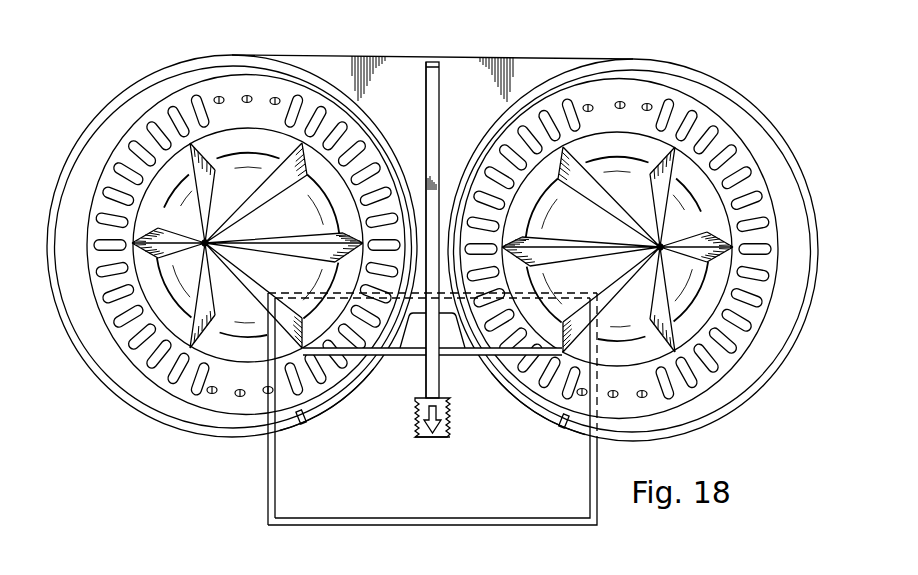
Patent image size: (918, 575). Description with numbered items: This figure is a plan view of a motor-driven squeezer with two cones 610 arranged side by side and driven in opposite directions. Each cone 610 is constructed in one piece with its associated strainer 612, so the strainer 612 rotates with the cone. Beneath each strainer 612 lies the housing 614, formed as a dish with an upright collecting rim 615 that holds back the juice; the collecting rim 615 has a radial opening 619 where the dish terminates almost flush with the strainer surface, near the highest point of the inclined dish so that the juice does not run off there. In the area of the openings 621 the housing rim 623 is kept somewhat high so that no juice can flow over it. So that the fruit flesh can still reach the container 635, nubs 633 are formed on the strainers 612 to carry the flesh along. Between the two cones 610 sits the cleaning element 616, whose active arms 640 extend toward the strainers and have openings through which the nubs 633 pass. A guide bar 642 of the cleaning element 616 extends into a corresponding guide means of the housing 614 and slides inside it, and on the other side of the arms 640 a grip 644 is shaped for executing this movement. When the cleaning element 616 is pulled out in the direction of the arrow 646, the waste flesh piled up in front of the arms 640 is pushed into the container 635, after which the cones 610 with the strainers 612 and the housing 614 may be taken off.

The cone 610 is at (432, 247).
The strainer 612 is at (147, 122).
The housing 614 is at (722, 395).
The collecting rim 615 is at (180, 68).
The cleaning element 616 is at (418, 156).
The radial opening 619 is at (325, 413).
The openings 621 is at (375, 372).
The housing rim 623 is at (193, 430).
The nubs 633 is at (249, 95).
The container 635 is at (303, 520).
The active arms 640 is at (409, 351).
The guide bar 642 is at (440, 116).
The grip 644 is at (422, 438).
The arrow 646 is at (435, 430).